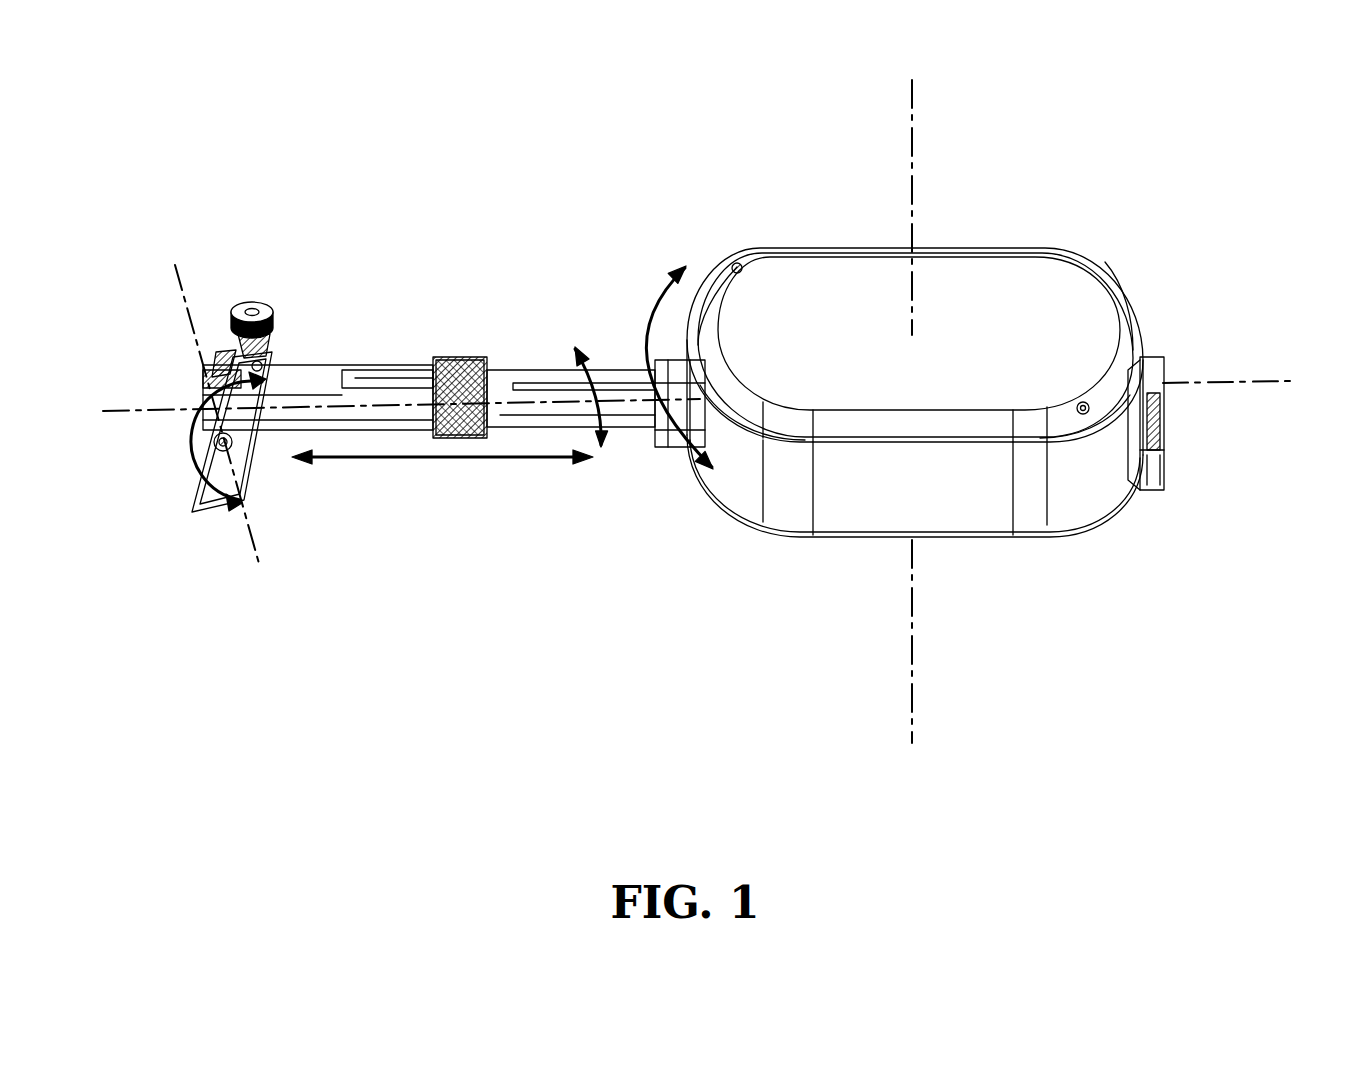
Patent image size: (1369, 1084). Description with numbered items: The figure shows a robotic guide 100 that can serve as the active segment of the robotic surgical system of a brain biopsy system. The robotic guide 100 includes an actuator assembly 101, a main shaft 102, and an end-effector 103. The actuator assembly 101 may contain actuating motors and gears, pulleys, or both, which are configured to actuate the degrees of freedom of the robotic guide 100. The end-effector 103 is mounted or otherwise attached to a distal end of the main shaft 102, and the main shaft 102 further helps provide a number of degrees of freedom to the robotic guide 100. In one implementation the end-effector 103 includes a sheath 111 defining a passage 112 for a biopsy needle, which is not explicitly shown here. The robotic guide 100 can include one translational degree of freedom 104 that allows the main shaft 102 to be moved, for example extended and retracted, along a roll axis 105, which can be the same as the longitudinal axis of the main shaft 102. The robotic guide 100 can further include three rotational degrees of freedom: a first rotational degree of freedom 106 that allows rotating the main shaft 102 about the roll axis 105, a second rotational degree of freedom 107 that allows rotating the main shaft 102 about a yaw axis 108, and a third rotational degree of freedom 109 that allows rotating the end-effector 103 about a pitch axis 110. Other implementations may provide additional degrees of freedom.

The robotic guide 100 is at (702, 453).
The actuator assembly 101 is at (920, 355).
The main shaft 102 is at (429, 357).
The end-effector 103 is at (232, 338).
The translational degree of freedom 104 is at (442, 456).
The roll axis 105 is at (708, 399).
The first rotational degree of freedom 106 is at (549, 353).
The second rotational degree of freedom 107 is at (649, 340).
The yaw axis 108 is at (915, 429).
The third rotational degree of freedom 109 is at (192, 474).
The pitch axis 110 is at (172, 434).
The sheath 111 is at (208, 313).
The passage 112 is at (290, 261).